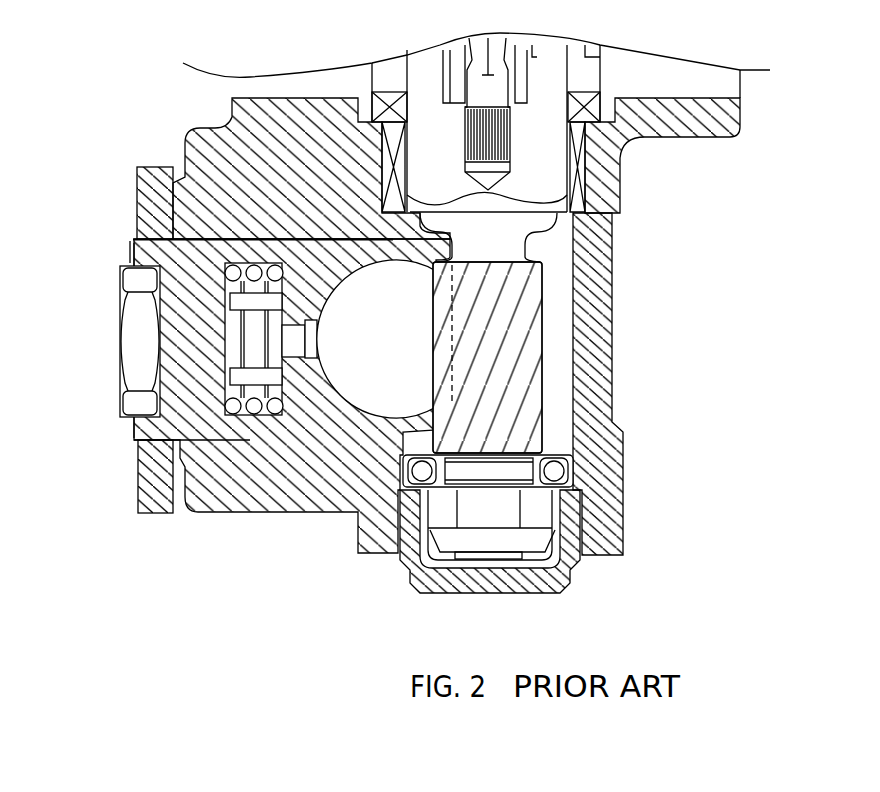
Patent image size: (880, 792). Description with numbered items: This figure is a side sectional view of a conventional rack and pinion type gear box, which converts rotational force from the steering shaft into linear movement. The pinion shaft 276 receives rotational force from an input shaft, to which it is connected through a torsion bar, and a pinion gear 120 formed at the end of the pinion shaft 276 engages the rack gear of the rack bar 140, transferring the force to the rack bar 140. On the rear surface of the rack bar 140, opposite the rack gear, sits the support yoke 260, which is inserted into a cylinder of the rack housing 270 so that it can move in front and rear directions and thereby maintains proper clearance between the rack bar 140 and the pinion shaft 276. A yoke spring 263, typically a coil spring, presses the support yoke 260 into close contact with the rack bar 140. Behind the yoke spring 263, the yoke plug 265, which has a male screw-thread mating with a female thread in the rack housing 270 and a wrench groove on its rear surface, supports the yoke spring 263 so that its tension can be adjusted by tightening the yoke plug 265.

The rack housing 270 is at (215, 130).
The yoke plug 265 is at (134, 240).
The yoke spring 263 is at (232, 330).
The rack bar 140 is at (404, 356).
The pinion gear 120 is at (520, 358).
The pinion shaft 276 is at (540, 218).
The support yoke 260 is at (302, 418).